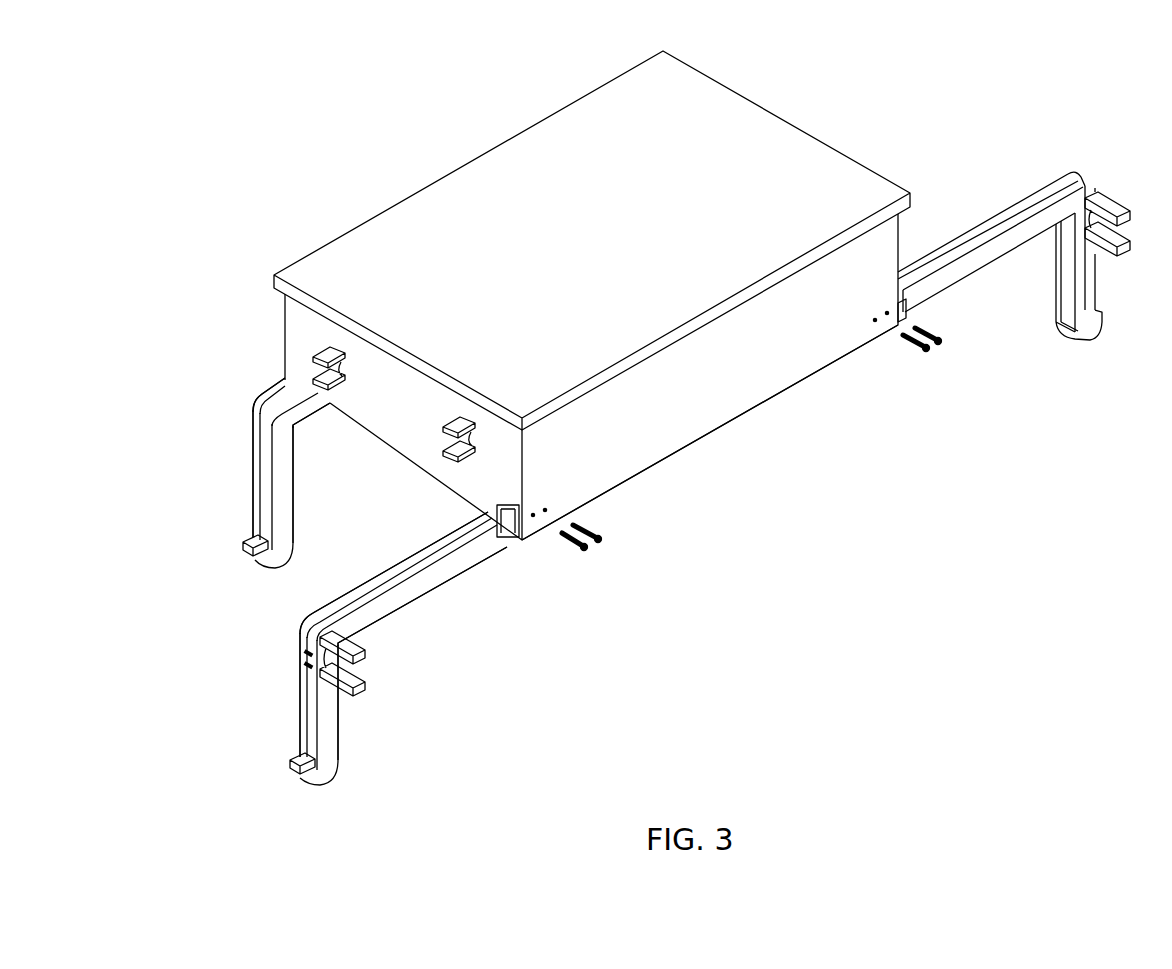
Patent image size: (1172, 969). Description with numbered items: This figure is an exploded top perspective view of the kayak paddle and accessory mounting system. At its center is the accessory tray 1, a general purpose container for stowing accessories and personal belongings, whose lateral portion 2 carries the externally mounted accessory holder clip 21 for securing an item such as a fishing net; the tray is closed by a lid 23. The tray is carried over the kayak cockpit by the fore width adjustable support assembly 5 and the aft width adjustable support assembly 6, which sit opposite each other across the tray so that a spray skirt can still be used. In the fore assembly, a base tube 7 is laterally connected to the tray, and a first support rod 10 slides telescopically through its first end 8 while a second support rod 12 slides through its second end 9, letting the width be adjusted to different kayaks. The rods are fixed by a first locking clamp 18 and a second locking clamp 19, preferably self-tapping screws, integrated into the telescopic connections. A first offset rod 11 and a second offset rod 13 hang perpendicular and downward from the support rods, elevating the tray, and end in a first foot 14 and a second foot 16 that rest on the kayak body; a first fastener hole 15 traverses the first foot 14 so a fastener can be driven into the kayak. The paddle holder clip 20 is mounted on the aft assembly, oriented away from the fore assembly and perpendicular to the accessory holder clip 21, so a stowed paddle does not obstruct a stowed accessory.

The accessory tray 1 is at (592, 295).
The lateral portion 2 is at (394, 407).
The fore width adjustable support assembly 5 is at (296, 465).
The aft width adjustable support assembly 6 is at (356, 738).
The base tube 7 is at (741, 410).
The first end 8 is at (504, 503).
The second end 9 is at (906, 316).
The first support rod 10 is at (283, 384).
The first offset rod 11 is at (258, 486).
The second support rod 12 is at (992, 213).
The second offset rod 13 is at (1095, 273).
The first foot 14 is at (282, 566).
The first fastener hole 15 is at (259, 546).
The second foot 16 is at (1098, 336).
The first locking clamp 18 is at (585, 549).
The second locking clamp 19 is at (919, 352).
The paddle holder clip 20 is at (366, 688).
The accessory holder clip 21 is at (326, 345).
The lid 23 is at (488, 156).